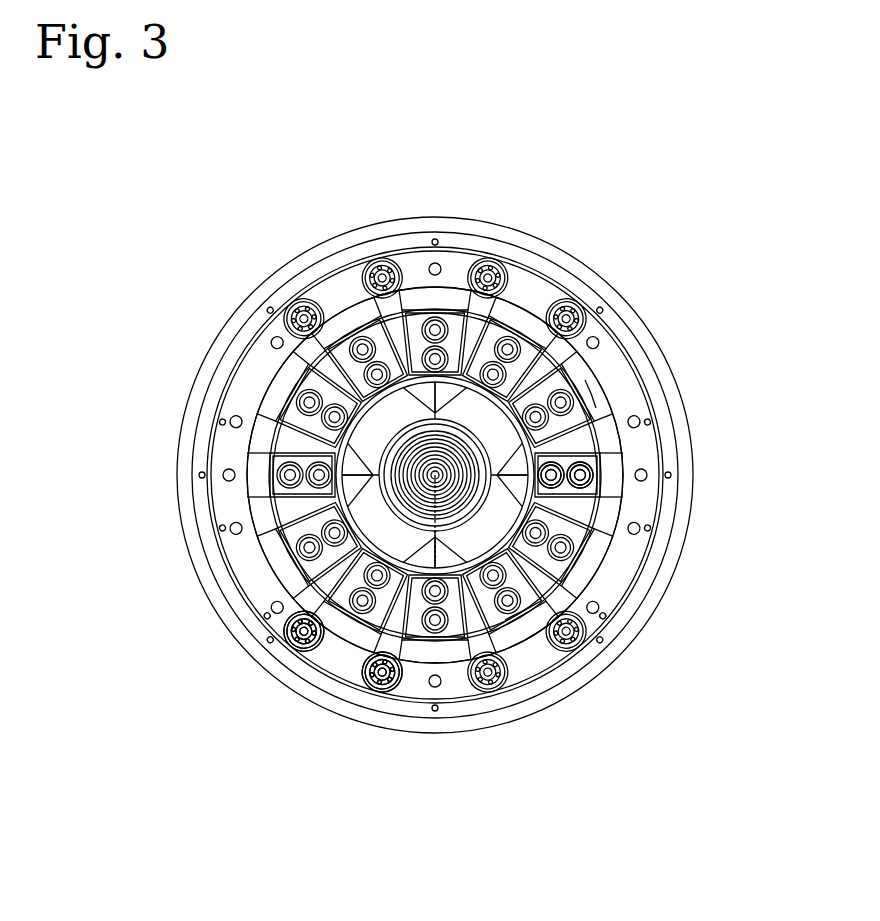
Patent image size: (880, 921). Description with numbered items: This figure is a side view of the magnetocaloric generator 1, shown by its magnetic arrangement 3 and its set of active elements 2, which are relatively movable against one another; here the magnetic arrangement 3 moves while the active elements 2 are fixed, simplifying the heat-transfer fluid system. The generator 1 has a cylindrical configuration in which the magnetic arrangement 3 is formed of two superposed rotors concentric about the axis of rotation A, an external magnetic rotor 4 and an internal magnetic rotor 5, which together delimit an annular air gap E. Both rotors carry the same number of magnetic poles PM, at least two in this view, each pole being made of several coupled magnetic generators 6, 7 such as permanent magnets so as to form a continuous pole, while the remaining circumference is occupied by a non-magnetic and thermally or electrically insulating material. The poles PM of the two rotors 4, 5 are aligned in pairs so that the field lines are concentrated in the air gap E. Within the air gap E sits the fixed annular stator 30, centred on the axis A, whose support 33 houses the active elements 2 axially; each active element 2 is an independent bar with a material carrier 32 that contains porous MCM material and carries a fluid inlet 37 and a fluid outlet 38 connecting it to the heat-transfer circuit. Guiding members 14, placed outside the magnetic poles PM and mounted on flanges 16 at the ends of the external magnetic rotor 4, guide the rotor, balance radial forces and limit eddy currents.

The magnetocaloric generator 1 is at (556, 204).
The magnetic arrangement 3 is at (585, 255).
The external magnetic rotor 4 is at (608, 577).
The active elements 2 is at (625, 412).
The stator 30 is at (435, 475).
The flanges 16 is at (527, 282).
The guiding members 14 is at (482, 250).
The material carrier 32 is at (600, 505).
The magnetic generator 6 is at (613, 465).
The magnetic poles PM is at (603, 455).
The support 33 is at (591, 398).
The air gap E is at (515, 631).
The magnetic generator 7 is at (345, 470).
The fluid inlet 37 is at (405, 565).
The axis of rotation A is at (435, 565).
The internal magnetic rotor 5 is at (381, 695).
The fluid outlet 38 is at (296, 648).